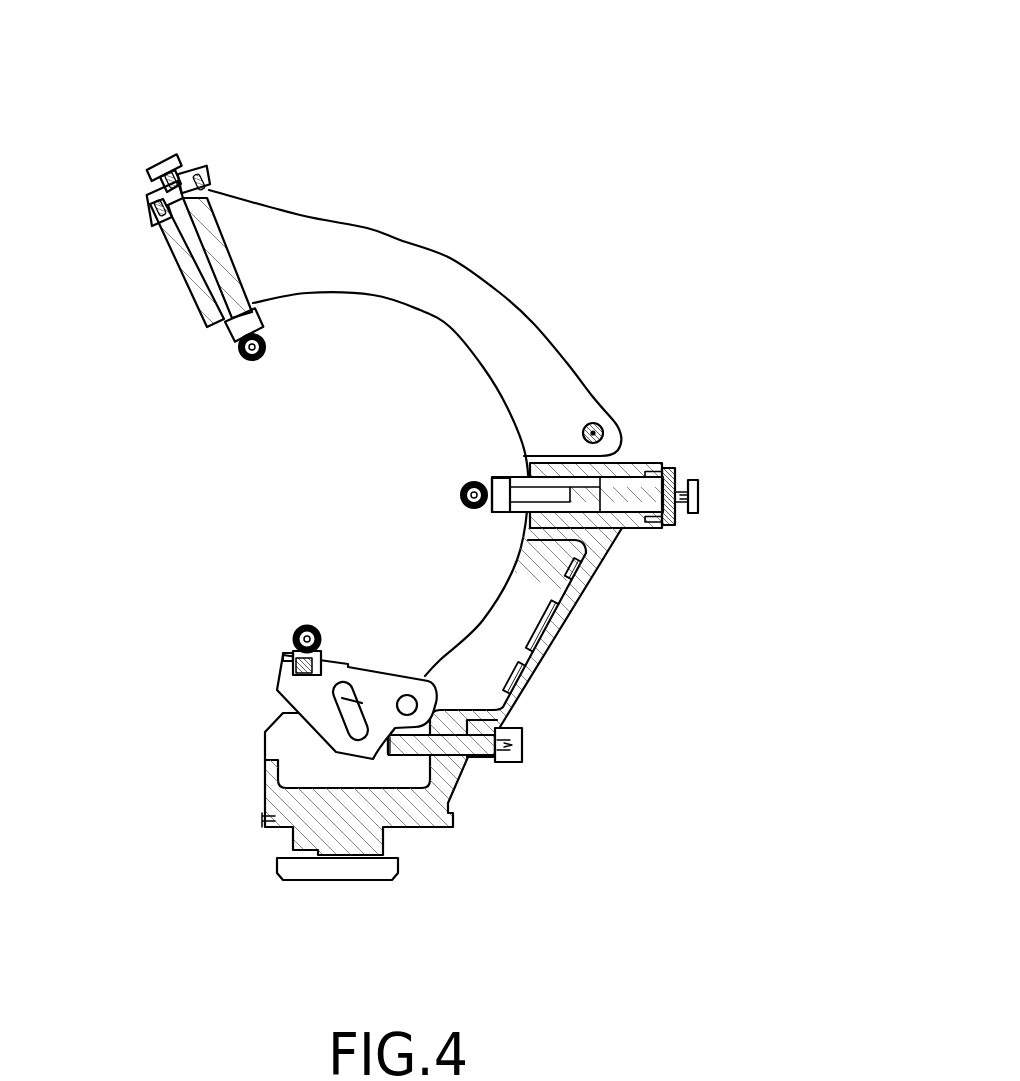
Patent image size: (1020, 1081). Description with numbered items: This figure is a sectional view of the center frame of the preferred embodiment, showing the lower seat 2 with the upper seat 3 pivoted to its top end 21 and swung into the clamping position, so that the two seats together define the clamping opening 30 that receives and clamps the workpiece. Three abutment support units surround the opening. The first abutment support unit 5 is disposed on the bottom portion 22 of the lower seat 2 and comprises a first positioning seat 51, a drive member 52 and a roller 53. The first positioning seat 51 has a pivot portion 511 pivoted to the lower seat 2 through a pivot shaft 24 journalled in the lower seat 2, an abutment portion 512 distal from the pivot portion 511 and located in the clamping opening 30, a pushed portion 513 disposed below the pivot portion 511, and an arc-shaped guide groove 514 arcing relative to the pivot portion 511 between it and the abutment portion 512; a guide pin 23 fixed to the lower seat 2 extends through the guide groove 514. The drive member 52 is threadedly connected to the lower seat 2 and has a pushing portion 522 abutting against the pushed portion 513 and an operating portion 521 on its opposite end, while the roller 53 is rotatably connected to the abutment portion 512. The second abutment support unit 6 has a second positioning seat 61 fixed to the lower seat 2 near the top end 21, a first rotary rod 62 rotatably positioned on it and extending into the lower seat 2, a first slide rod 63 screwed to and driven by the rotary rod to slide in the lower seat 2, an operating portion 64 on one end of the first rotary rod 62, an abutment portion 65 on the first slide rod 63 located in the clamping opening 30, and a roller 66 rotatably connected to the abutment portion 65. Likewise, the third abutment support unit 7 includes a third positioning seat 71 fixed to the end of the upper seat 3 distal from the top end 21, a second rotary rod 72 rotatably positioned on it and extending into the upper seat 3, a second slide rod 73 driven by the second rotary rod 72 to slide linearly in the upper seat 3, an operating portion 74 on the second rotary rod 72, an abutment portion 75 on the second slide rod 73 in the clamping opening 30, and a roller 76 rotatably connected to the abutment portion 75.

The lower seat 2 is at (446, 733).
The top end 21 is at (596, 530).
The bottom portion 22 is at (298, 797).
The guide pin 23 is at (345, 725).
The pivot shaft 24 is at (413, 677).
The upper seat 3 is at (394, 205).
The clamping opening 30 is at (333, 317).
The first abutment support unit 5 is at (261, 632).
The first positioning seat 51 is at (285, 678).
The pivot portion 511 is at (397, 703).
The abutment portion 512 is at (287, 651).
The pushed portion 513 is at (364, 744).
The arc-shaped guide groove 514 is at (340, 682).
The drive member 52 is at (452, 748).
The operating portion 521 is at (524, 745).
The pushing portion 522 is at (404, 742).
The roller 53 is at (301, 625).
The second abutment support unit 6 is at (585, 451).
The second positioning seat 61 is at (668, 470).
The first rotary rod 62 is at (633, 492).
The first slide rod 63 is at (515, 466).
The operating portion 64 is at (700, 498).
The abutment portion 65 is at (496, 514).
The roller 66 is at (460, 492).
The third abutment support unit 7 is at (156, 210).
The third positioning seat 71 is at (203, 173).
The second rotary rod 72 is at (185, 215).
The second slide rod 73 is at (205, 272).
The operating portion 74 is at (163, 160).
The abutment portion 75 is at (232, 335).
The roller 76 is at (243, 360).